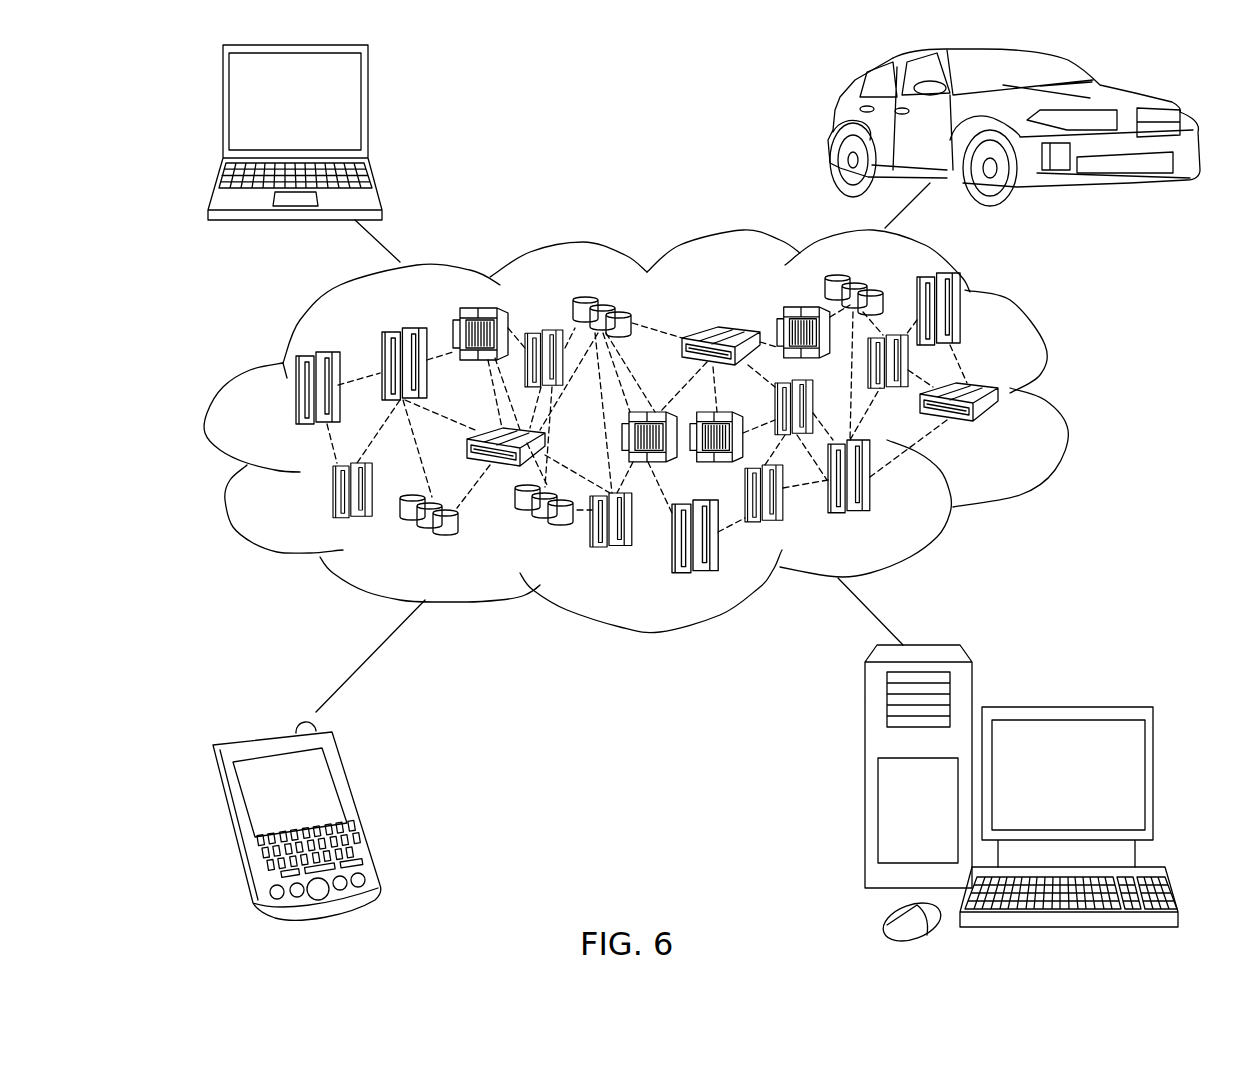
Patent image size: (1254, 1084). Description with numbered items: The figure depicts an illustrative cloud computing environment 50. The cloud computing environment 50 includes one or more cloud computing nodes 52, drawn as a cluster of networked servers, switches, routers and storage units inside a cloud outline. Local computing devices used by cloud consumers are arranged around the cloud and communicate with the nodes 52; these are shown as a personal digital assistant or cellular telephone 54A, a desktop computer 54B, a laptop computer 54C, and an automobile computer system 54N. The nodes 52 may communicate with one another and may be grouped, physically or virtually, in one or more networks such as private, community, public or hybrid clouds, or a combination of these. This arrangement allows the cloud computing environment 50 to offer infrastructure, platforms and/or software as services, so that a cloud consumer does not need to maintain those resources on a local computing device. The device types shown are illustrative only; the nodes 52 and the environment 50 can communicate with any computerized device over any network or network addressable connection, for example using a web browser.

The cloud computing environment 50 is at (1065, 402).
The cloud computing nodes 52 is at (1003, 432).
The personal digital assistant or cellular telephone 54A is at (357, 807).
The desktop computer 54B is at (1063, 706).
The laptop computer 54C is at (368, 110).
The automobile computer system 54N is at (833, 128).